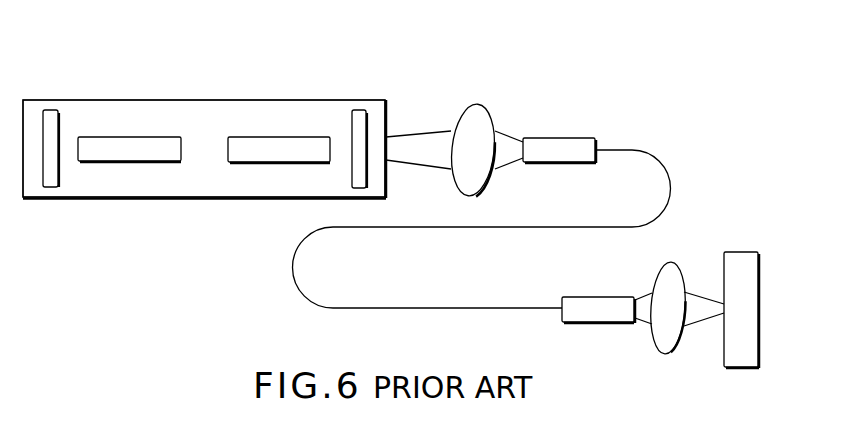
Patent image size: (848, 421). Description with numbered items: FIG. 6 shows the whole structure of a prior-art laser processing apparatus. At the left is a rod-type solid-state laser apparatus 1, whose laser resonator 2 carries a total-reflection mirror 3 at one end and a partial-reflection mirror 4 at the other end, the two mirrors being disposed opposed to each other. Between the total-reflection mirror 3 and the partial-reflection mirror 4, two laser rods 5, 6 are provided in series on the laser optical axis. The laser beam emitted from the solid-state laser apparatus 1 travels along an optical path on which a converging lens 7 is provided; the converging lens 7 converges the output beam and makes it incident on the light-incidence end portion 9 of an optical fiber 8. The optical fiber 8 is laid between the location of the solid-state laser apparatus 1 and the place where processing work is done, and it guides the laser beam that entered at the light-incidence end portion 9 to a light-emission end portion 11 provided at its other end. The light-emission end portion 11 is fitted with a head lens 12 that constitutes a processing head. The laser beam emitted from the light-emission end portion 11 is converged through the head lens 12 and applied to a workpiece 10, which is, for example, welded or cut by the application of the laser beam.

The solid-state laser apparatus 1 is at (132, 80).
The laser resonator 2 is at (213, 100).
The total-reflection mirror 3 is at (48, 110).
The partial-reflection mirror 4 is at (357, 110).
The laser rod 5 is at (126, 162).
The laser rod 6 is at (260, 163).
The converging lens 7 is at (480, 106).
The optical fiber 8 is at (661, 162).
The light-incidence end portion 9 is at (559, 137).
The workpiece 10 is at (741, 252).
The light-emission end portion 11 is at (599, 296).
The head lens 12 is at (655, 344).